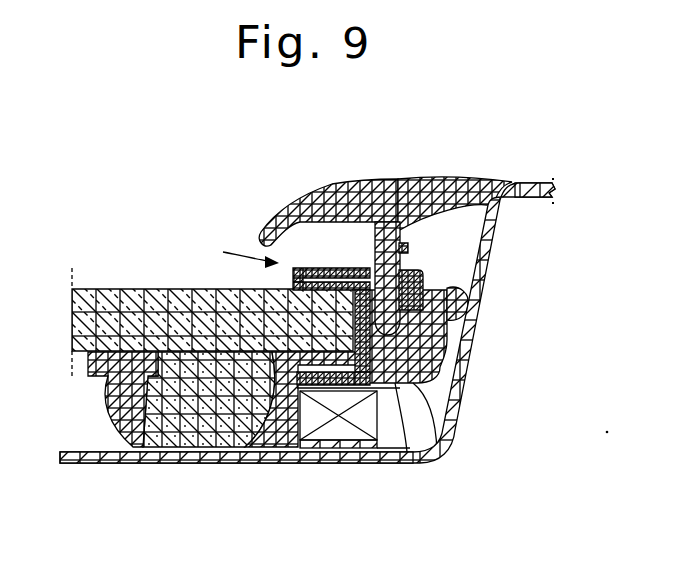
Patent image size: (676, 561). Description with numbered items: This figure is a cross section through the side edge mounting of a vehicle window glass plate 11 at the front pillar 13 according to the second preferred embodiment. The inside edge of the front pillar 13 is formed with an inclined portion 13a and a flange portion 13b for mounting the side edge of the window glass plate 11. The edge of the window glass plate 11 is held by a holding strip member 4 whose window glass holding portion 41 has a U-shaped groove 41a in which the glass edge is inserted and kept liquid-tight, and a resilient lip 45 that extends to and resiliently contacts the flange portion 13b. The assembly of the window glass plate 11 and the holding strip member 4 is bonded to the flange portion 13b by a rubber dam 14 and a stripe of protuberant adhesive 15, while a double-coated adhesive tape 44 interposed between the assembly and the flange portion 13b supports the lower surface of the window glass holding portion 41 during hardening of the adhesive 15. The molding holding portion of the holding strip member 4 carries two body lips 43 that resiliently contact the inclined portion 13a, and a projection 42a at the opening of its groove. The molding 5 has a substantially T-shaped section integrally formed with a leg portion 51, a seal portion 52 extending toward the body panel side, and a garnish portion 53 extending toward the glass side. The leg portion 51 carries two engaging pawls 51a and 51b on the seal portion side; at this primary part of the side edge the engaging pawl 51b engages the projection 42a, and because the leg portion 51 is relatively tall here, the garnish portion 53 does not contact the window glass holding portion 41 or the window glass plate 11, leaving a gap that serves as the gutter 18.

The holding strip member 4 is at (426, 396).
The molding 5 is at (410, 209).
The window glass plate 11 is at (163, 313).
The front pillar 13 is at (532, 185).
The inclined portion 13a is at (465, 377).
The flange portion 13b is at (188, 464).
The rubber dam 14 is at (115, 414).
The adhesive 15 is at (178, 398).
The gutter 18 is at (231, 253).
The window glass holding portion 41 is at (439, 447).
The groove 41a is at (400, 395).
The projection 42a is at (456, 294).
The body lips 43 is at (460, 345).
The double-coated adhesive tape 44 is at (338, 441).
The resilient lip 45 is at (258, 462).
The leg portion 51 is at (391, 238).
The engaging pawl 51a is at (410, 249).
The engaging pawl 51b is at (428, 270).
The seal portion 52 is at (460, 178).
The garnish portion 53 is at (320, 205).